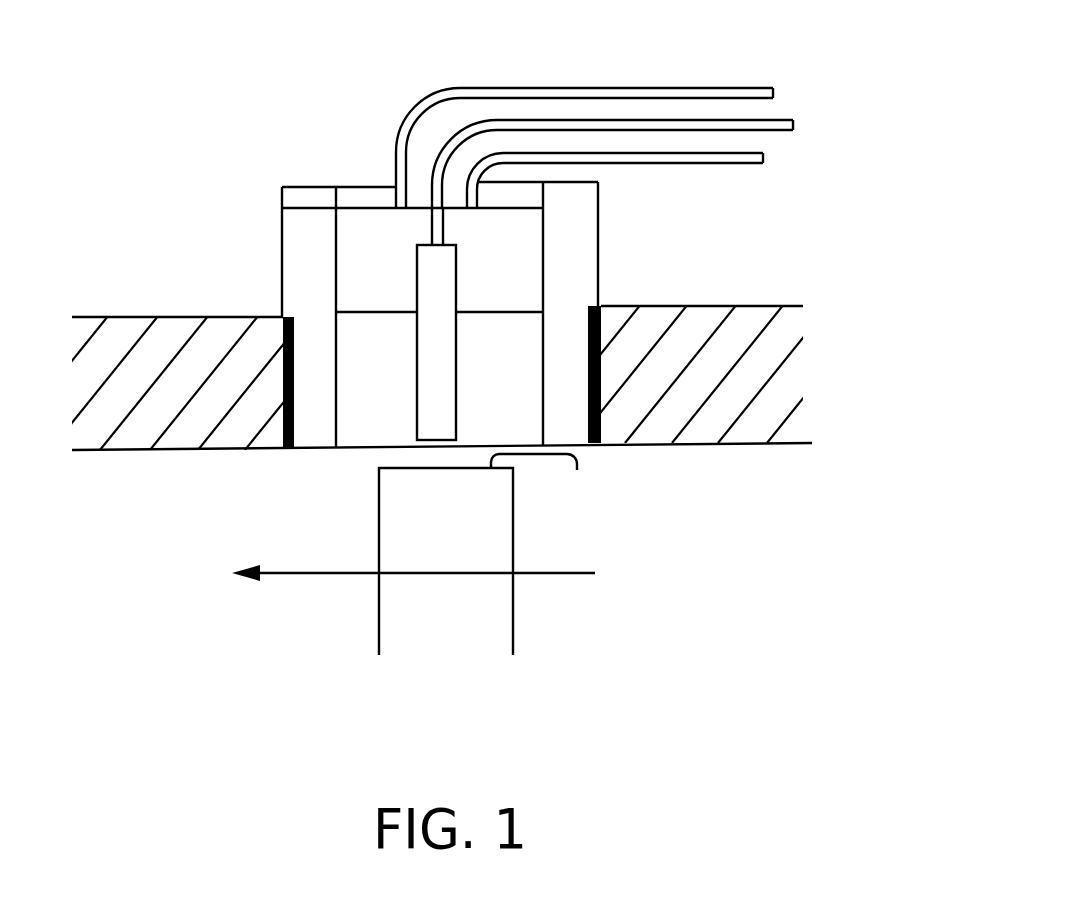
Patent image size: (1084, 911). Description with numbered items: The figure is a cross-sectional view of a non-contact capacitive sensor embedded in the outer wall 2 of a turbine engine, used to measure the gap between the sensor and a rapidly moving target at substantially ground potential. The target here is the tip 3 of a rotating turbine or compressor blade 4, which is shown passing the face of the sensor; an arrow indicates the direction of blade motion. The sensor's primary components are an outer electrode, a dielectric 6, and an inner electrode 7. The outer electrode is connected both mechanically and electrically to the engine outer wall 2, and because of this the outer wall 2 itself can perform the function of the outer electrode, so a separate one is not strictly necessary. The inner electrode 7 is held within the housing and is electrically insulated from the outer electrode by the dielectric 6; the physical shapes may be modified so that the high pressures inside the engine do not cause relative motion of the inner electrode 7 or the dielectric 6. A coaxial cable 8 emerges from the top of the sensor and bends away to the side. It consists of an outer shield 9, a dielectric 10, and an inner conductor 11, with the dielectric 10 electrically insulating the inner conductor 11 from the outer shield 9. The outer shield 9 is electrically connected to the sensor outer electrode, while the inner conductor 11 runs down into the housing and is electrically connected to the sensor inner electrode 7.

The outer wall 2 is at (763, 352).
The tip 3 is at (537, 479).
The blade 4 is at (427, 625).
The dielectric 6 is at (523, 377).
The inner electrode 7 is at (438, 380).
The coaxial cable 8 is at (644, 106).
The outer shield 9 is at (513, 88).
The dielectric 10 is at (570, 107).
The inner conductor 11 is at (630, 120).